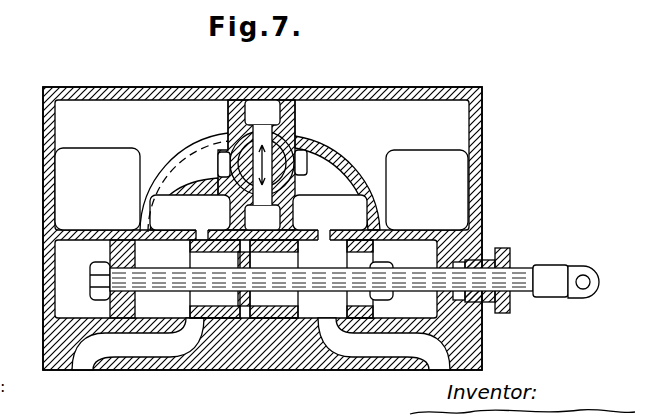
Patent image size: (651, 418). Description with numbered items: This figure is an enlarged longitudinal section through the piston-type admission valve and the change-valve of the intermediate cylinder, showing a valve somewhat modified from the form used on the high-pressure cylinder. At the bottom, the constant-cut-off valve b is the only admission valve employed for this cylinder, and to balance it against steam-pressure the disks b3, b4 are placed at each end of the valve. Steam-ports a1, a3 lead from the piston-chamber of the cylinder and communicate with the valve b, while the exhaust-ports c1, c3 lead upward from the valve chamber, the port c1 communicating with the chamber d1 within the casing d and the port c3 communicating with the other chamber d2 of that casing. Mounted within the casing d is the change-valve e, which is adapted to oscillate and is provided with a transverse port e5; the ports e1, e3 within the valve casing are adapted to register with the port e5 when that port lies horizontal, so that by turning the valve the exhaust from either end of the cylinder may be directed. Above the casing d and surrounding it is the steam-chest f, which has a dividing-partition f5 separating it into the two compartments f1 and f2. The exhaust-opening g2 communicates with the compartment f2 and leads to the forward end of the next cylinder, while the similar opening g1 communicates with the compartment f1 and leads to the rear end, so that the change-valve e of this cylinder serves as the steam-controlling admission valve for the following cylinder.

The steam-chest compartment f1 is at (158, 165).
The steam-chest compartment f2 is at (389, 135).
The dividing-partition f5 is at (234, 116).
The steam-chest f is at (281, 100).
The exhaust-opening g1 is at (97, 189).
The exhaust-opening g2 is at (427, 190).
The casing d is at (212, 139).
The chamber d1 is at (206, 188).
The chamber d2 is at (330, 157).
The valve e is at (296, 135).
The port e1 is at (262, 112).
The port e3 is at (262, 217).
The transverse port e5 is at (265, 163).
The exhaust-port c1 is at (200, 240).
The exhaust-port c3 is at (330, 251).
The constant-cut-off valve b is at (354, 278).
The disk b3 is at (110, 250).
The disk b4 is at (387, 250).
The steam-port a1 is at (138, 344).
The steam-port a3 is at (362, 347).